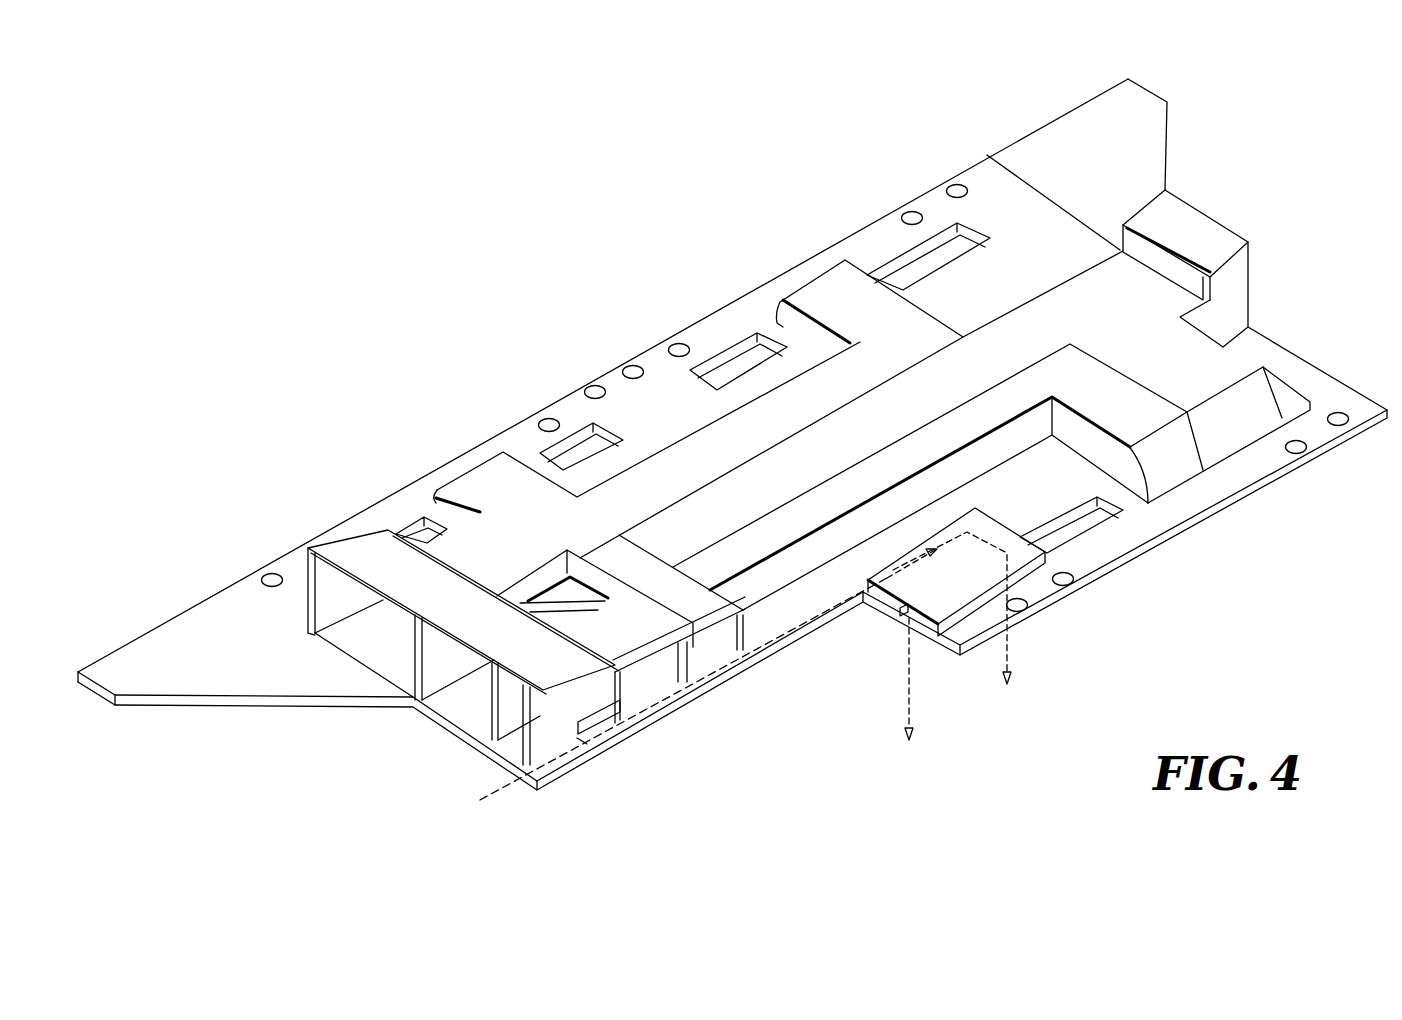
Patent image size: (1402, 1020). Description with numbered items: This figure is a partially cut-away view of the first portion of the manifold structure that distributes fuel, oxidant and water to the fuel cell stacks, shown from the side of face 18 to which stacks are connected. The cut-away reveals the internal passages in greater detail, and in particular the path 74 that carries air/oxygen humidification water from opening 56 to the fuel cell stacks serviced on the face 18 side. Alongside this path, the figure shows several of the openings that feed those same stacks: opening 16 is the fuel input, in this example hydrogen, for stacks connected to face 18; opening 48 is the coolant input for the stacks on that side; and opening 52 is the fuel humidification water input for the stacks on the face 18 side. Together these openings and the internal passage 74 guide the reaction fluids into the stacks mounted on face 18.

The fuel input opening 16 is at (1257, 285).
The face 18 is at (1272, 478).
The coolant input opening 48 is at (491, 674).
The fuel humidification water input opening 52 is at (521, 699).
The air/oxygen input opening 56 is at (566, 726).
The path 74 is at (620, 720).